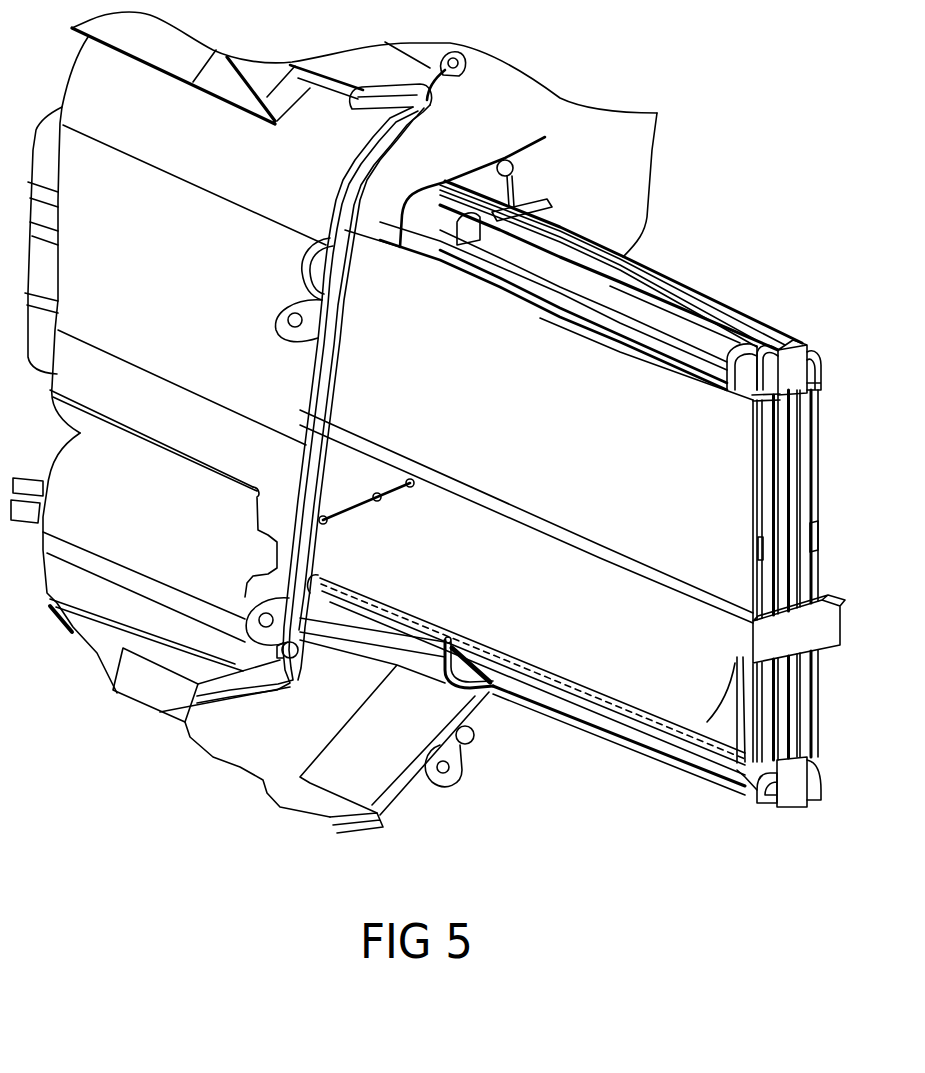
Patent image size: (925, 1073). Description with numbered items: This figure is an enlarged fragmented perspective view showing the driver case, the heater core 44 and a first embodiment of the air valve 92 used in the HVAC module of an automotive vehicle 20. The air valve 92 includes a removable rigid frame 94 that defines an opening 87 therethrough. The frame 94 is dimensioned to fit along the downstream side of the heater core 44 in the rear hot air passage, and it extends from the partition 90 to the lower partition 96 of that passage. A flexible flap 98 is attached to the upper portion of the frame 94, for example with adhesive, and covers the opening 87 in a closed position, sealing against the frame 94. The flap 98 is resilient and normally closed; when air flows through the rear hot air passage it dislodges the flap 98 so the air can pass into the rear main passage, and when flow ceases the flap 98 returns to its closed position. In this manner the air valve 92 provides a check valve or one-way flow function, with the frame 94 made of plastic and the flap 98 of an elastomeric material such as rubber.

The automotive vehicle 20 is at (693, 108).
The heater core 44 is at (800, 500).
The opening 87 is at (717, 720).
The partition 90 is at (370, 475).
The air valve 92 is at (620, 563).
The removable rigid frame 94 is at (740, 765).
The lower partition 96 is at (435, 648).
The flexible flap 98 is at (663, 680).